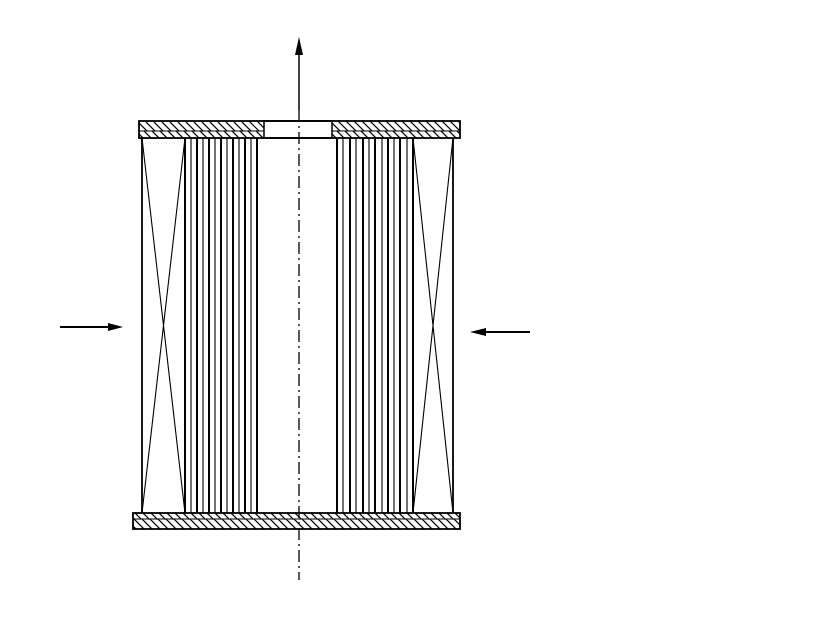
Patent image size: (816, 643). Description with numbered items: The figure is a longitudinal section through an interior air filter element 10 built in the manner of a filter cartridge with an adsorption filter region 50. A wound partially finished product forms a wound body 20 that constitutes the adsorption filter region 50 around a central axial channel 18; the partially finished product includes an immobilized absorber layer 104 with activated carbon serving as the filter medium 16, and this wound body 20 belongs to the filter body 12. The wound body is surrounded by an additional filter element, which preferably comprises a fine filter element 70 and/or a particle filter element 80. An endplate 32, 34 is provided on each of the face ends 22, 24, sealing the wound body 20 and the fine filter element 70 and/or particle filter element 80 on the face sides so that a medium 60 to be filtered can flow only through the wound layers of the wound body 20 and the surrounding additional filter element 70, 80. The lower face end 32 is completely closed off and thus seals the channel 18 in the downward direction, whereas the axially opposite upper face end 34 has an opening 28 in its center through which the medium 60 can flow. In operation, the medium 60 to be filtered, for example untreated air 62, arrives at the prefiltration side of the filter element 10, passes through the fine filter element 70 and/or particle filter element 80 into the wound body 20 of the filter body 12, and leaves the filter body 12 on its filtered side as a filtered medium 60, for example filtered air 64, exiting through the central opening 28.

The filter element 10 is at (536, 134).
The filter body 12 is at (430, 325).
The filter medium 16 is at (430, 325).
The axial channel 18 is at (290, 327).
The wound body 20 is at (430, 325).
The face end 22 is at (215, 530).
The face side 24 is at (220, 120).
The opening 28 is at (277, 127).
The endplate 32 is at (273, 530).
The endplate 34 is at (162, 120).
The adsorption filter region 50 is at (430, 325).
The medium 60 is at (359, 308).
The untreated air 62 is at (507, 332).
The filtered air 64 is at (300, 77).
The fine filter element 70 is at (350, 325).
The particle filter element 80 is at (427, 430).
The immobilized absorber layer 104 is at (398, 222).